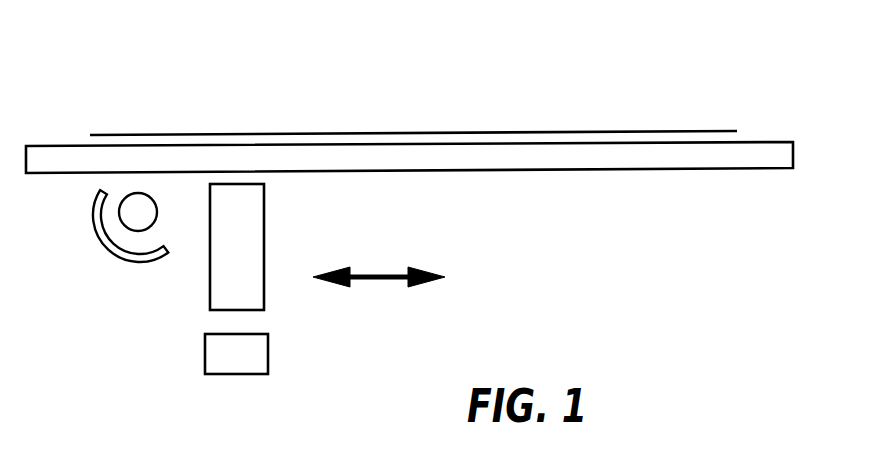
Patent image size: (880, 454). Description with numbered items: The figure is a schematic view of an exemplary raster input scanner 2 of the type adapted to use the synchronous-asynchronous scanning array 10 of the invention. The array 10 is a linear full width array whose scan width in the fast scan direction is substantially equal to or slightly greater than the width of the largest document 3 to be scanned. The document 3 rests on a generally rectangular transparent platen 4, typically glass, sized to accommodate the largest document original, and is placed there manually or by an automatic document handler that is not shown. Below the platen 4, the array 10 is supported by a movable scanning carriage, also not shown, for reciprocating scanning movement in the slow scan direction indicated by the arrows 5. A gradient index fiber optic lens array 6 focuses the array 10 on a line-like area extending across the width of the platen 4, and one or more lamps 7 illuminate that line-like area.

The raster input scanner 2 is at (365, 96).
The document 3 is at (443, 132).
The transparent platen 4 is at (672, 170).
The arrows 5 is at (385, 279).
The gradient index fiber optic lens array 6 is at (264, 227).
The lamp 7 is at (102, 248).
The synchronous-asynchronous scanning array 10 is at (176, 344).